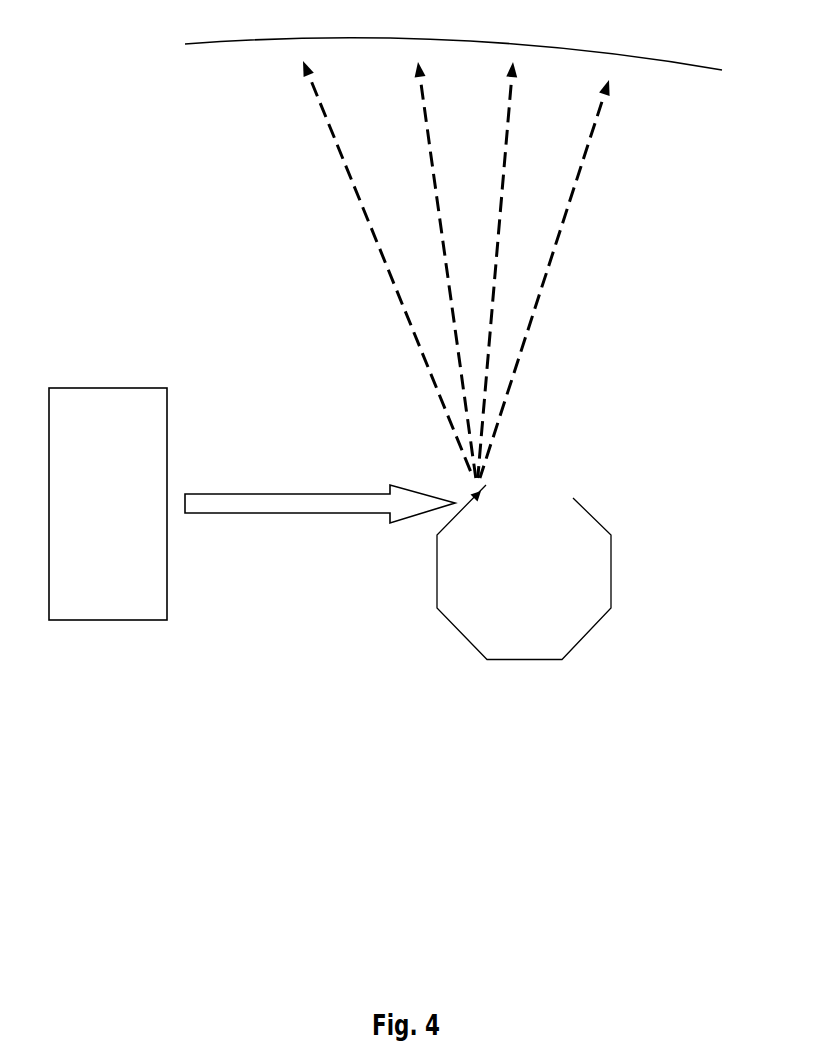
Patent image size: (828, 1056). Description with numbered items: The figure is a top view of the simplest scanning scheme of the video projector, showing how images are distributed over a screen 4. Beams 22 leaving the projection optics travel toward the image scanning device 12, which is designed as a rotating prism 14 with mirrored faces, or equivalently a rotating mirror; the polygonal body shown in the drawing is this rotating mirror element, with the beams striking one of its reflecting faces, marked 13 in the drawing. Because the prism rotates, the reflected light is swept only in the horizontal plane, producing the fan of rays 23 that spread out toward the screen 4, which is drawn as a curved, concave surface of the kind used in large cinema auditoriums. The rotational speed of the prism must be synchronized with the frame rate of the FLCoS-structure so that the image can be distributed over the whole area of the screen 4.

The screen 4 is at (453, 76).
The image scanning device 12 is at (108, 504).
The polygonal rotating mirror 13 is at (524, 572).
The rotating prism 14 is at (486, 485).
The beams 22 is at (320, 521).
The rays 23 is at (456, 269).